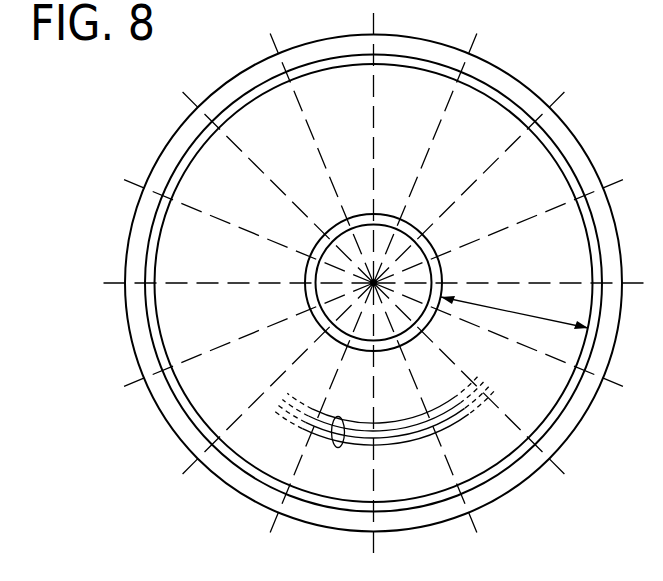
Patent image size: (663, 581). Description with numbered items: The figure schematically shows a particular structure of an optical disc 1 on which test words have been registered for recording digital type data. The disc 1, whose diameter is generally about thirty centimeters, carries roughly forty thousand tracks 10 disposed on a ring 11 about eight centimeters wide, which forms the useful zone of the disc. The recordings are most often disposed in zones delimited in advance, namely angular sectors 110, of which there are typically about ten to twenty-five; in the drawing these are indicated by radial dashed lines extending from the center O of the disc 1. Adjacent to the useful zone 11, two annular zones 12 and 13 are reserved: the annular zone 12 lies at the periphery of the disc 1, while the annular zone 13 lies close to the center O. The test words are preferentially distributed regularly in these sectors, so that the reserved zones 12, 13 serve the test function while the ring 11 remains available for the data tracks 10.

The disc 1 is at (126, 340).
The angular sectors 110 is at (537, 192).
The annular zone 12 is at (563, 404).
The annular zone 13 is at (305, 272).
The ring 11 is at (514, 311).
The tracks 10 is at (336, 448).
The center O is at (374, 282).